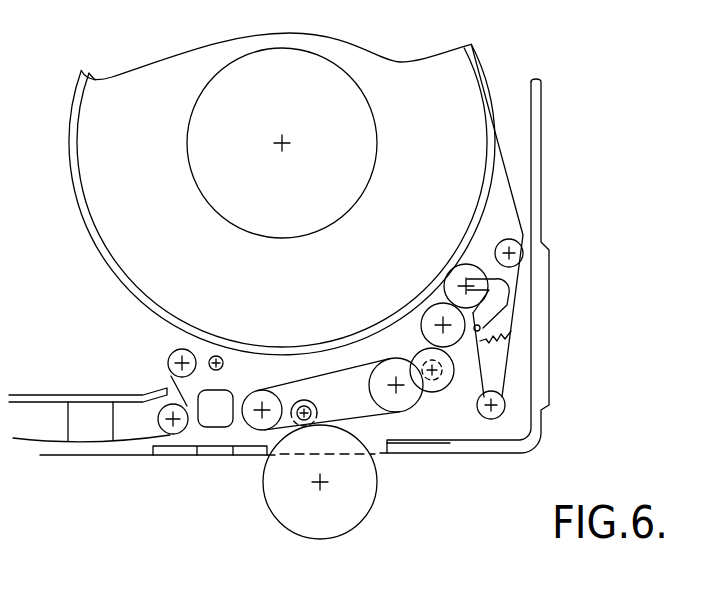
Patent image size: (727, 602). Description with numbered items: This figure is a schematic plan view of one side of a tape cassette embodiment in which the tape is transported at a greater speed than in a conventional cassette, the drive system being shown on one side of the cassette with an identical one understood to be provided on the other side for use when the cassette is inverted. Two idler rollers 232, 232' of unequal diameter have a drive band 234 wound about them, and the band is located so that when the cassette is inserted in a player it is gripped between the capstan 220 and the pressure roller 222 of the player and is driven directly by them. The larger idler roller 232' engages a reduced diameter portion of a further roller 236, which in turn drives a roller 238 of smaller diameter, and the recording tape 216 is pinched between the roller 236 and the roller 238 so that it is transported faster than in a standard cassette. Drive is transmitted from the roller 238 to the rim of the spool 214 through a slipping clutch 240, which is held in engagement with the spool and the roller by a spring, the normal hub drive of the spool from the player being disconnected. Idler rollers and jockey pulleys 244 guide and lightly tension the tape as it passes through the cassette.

The spool 214 is at (371, 183).
The recording tape 216 is at (122, 440).
The capstan 220 is at (332, 400).
The pressure roller 222 is at (290, 515).
The idler roller 232 is at (246, 449).
The idler roller 232' is at (406, 431).
The drive band 234 is at (342, 370).
The further roller 236 is at (443, 387).
The roller 238 is at (430, 307).
The slipping clutch 240 is at (460, 267).
The idler rollers and jockey pulleys 244 is at (170, 355).